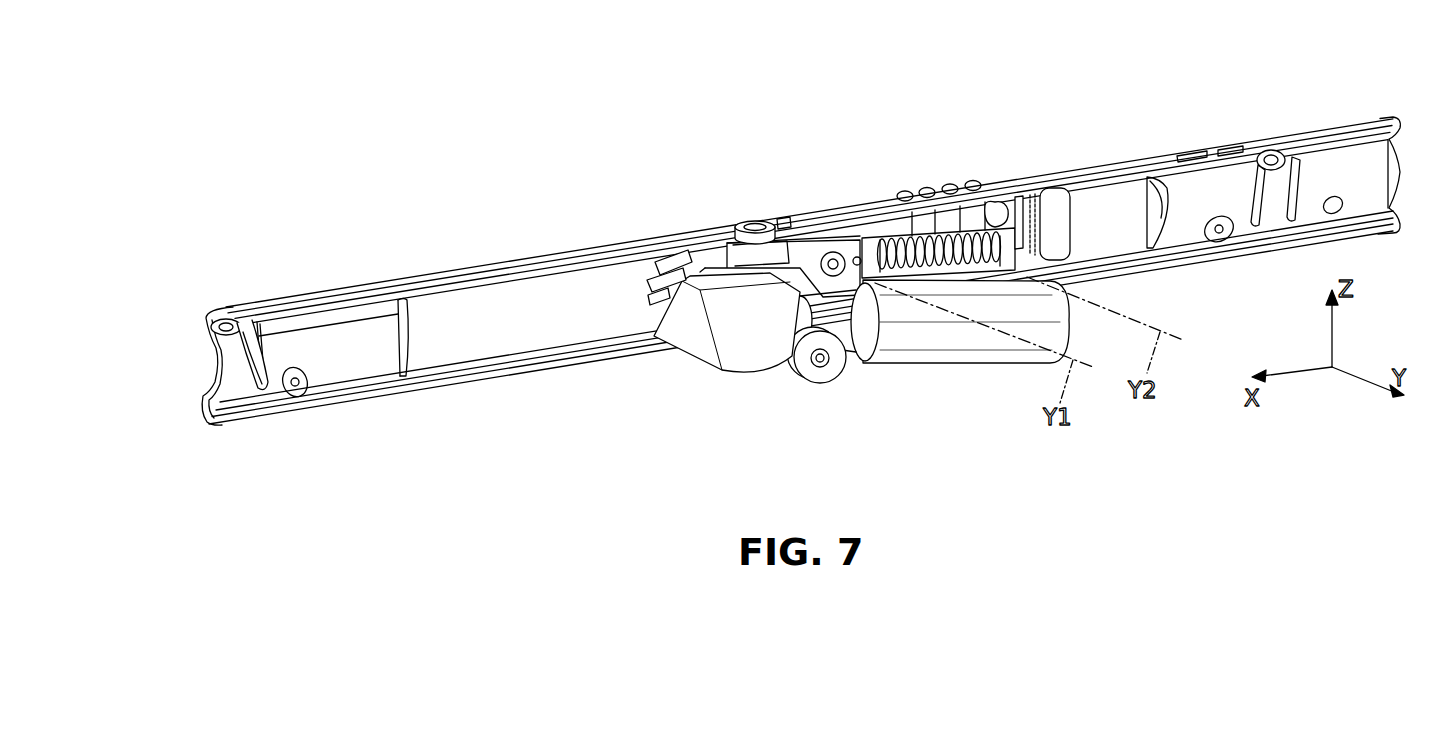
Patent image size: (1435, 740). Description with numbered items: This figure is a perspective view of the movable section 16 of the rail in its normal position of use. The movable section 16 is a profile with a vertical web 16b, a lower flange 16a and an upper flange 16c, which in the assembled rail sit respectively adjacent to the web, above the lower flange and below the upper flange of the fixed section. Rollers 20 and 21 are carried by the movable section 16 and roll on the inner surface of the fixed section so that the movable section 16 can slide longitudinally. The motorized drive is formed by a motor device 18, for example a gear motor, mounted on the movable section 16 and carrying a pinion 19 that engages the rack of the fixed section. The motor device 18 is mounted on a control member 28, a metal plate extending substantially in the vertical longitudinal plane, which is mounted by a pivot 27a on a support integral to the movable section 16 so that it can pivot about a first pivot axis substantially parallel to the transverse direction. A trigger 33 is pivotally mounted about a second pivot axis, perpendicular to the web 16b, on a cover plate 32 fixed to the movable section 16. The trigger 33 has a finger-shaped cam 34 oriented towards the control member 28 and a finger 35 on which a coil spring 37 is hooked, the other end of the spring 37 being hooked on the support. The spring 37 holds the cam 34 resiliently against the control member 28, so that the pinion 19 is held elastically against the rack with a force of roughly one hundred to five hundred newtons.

The movable section 16 is at (801, 311).
The lower flange 16a is at (480, 373).
The vertical web 16b is at (420, 353).
The upper flange 16c is at (467, 273).
The motor device 18 is at (763, 390).
The pinion 19 is at (655, 292).
The roller 20 is at (210, 326).
The roller 21 is at (745, 222).
The pivot 27a is at (838, 262).
The control member 28 is at (800, 266).
The cover plate 32 is at (1073, 175).
The trigger 33 is at (1032, 250).
The cam 34 is at (995, 240).
The finger 35 is at (1014, 245).
The spring 37 is at (900, 242).